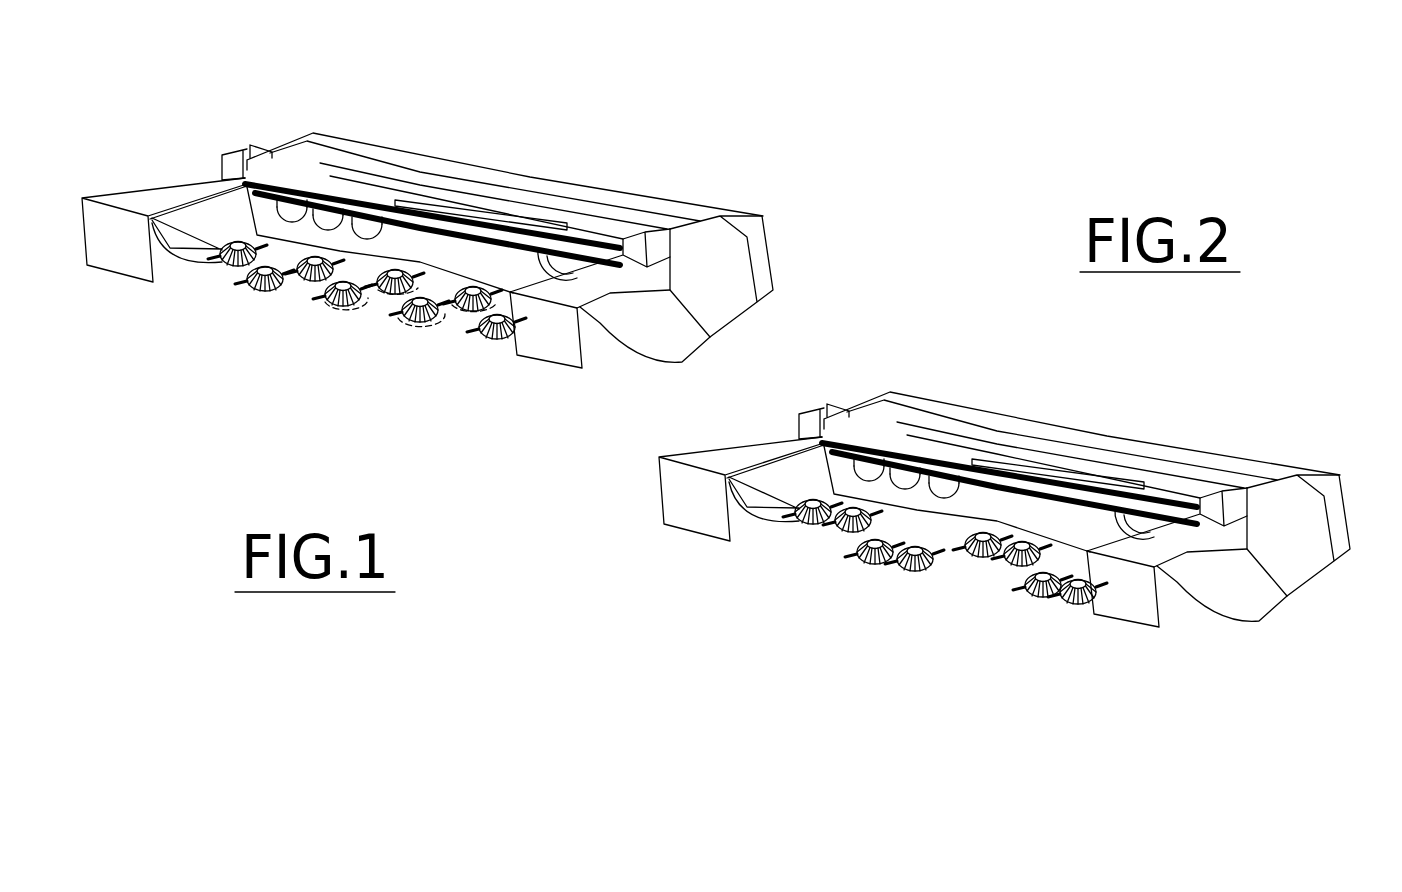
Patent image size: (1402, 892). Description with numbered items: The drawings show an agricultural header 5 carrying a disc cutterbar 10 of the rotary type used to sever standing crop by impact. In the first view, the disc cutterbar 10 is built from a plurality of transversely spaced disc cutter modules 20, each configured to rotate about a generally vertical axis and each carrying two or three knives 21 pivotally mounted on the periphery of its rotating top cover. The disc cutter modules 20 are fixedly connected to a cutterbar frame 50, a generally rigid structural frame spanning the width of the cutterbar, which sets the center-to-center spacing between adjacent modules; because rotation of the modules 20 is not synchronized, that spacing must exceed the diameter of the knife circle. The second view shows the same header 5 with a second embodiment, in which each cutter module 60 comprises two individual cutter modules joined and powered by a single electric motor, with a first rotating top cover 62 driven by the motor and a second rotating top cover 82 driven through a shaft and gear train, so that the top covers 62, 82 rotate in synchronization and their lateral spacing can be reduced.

In FIG. 1, the header 5 is at (250, 98).
In FIG. 2, the header 5 is at (885, 290).
In FIG. 1, the disc cutterbar 10 is at (380, 420).
In FIG. 2, the disc cutterbar 10 is at (913, 700).
In FIG. 1, the disc cutter module 20 is at (269, 318).
In FIG. 1, the knife 21 is at (340, 255).
In FIG. 2, the knife 21 is at (907, 543).
In FIG. 1, the cutterbar frame 50 is at (280, 255).
In FIG. 2, the cutter module 60 is at (888, 527).
In FIG. 2, the first rotating top cover 62 is at (934, 595).
In FIG. 2, the second rotating top cover 82 is at (872, 590).